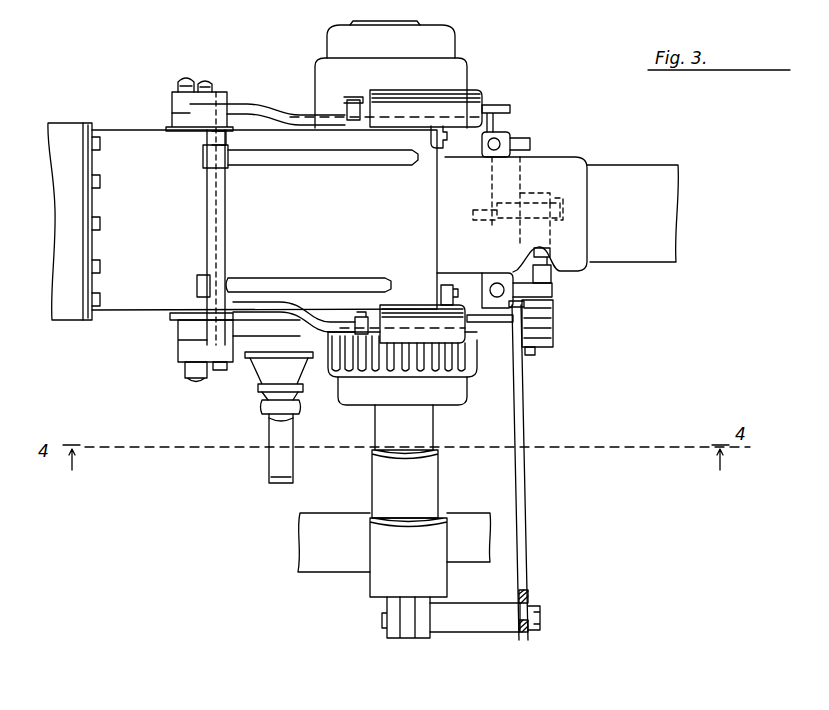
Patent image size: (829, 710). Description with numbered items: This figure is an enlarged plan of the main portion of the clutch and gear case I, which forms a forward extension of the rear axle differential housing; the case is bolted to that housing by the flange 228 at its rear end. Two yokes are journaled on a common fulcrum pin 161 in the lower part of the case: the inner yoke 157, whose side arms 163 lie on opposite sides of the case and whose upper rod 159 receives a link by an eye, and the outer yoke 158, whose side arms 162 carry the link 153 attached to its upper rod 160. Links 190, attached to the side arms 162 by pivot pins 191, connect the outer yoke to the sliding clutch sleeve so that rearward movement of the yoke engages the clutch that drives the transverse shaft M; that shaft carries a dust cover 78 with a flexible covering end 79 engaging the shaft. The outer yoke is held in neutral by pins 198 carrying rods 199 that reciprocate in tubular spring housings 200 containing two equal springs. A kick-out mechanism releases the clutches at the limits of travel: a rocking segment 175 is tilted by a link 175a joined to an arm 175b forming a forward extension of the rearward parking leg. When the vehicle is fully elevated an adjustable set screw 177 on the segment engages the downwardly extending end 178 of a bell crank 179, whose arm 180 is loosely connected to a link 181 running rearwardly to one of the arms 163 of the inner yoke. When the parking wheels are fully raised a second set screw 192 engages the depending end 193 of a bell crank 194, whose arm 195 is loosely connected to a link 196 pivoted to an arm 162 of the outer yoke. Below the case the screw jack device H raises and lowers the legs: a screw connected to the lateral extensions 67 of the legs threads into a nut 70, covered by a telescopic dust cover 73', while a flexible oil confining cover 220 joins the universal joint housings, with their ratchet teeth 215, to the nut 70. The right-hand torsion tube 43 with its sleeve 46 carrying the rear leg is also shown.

The flange 228 is at (90, 318).
The main clutch and gear case I is at (161, 302).
The side arms of outer yoke 162 is at (180, 97).
The side arms of inner yoke 163 is at (177, 118).
The fulcrum pin 161 is at (184, 80).
The pivot pins 191 is at (208, 84).
The links 190 is at (258, 108).
The upper rod of outer yoke 160 is at (218, 248).
The upper rod of inner yoke 159 is at (205, 137).
The inner yoke 157 is at (191, 266).
The link 153 is at (322, 155).
The outer yoke 158 is at (195, 357).
The dust cover 78 is at (275, 365).
The flexible covering end 79 is at (264, 404).
The transverse shaft M is at (280, 470).
The tubular spring housings 200 is at (400, 96).
The link 196 is at (500, 110).
The bell crank 194 is at (522, 127).
The arm of bell crank 195 is at (518, 135).
The downwardly depending end of bell crank 193 is at (531, 143).
The rods 199 is at (450, 292).
The pins 198 is at (361, 316).
The arm of bell crank 180 is at (493, 306).
The link 181 is at (486, 338).
The adjustable set screw 177 is at (550, 250).
The downwardly extending end of bell crank 178 is at (547, 290).
The bell crank 179 is at (539, 304).
The rocking segment 175 is at (563, 328).
The set screw 192 is at (537, 353).
The link 175a is at (530, 524).
The arm 175b is at (484, 627).
The flexible oil confining cover 220 is at (453, 394).
The ratchet teeth 215 is at (390, 367).
The nut 70 is at (388, 423).
The telescopic dust cover 73' is at (433, 523).
The screw jack device H is at (362, 481).
The sleeve 46 is at (353, 560).
The torsion tube 43 is at (462, 523).
The lateral extensions 67 is at (408, 634).